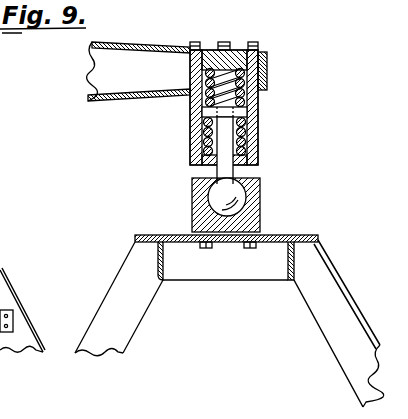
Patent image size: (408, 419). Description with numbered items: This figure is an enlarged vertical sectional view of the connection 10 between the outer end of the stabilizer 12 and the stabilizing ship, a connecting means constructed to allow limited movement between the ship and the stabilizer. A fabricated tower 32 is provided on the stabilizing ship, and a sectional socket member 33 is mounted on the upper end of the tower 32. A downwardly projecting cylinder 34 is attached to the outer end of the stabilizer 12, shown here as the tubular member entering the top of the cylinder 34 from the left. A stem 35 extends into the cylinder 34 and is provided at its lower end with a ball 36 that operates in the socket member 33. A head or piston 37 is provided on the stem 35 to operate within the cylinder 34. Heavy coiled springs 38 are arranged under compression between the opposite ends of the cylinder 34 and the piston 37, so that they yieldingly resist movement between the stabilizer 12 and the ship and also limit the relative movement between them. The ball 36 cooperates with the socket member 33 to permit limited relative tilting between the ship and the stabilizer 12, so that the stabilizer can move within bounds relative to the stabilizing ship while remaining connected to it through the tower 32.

The mounting assembly 10 is at (291, 0).
The stabilizer 12 is at (147, 43).
The fabricated tower 32 is at (342, 287).
The sectional socket member 33 is at (254, 201).
The cylinder 34 is at (260, 118).
The stem 35 is at (223, 145).
The ball 36 is at (222, 194).
The head or piston 37 is at (208, 113).
The coiled springs 38 is at (243, 92).